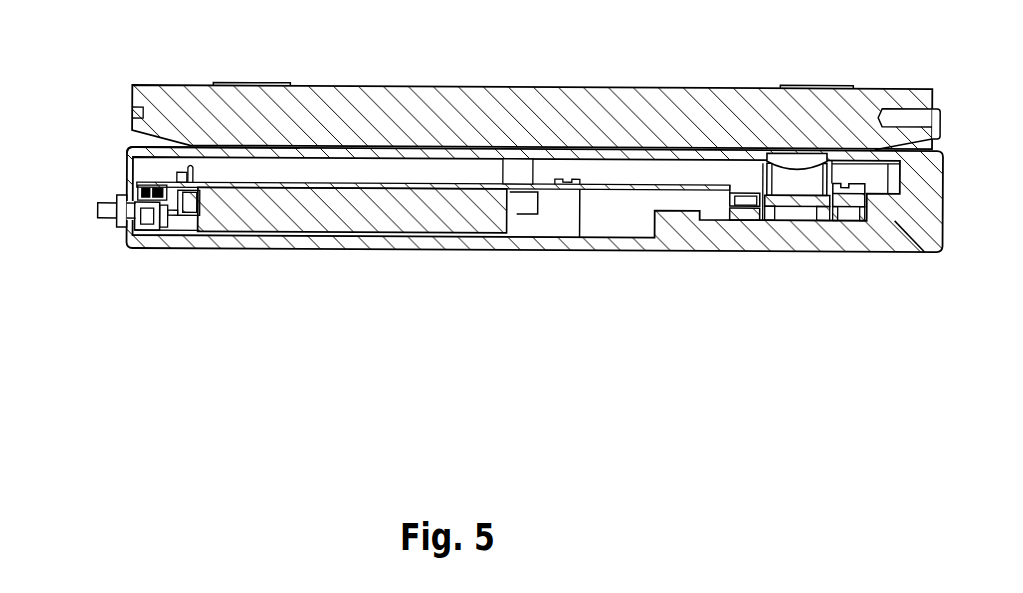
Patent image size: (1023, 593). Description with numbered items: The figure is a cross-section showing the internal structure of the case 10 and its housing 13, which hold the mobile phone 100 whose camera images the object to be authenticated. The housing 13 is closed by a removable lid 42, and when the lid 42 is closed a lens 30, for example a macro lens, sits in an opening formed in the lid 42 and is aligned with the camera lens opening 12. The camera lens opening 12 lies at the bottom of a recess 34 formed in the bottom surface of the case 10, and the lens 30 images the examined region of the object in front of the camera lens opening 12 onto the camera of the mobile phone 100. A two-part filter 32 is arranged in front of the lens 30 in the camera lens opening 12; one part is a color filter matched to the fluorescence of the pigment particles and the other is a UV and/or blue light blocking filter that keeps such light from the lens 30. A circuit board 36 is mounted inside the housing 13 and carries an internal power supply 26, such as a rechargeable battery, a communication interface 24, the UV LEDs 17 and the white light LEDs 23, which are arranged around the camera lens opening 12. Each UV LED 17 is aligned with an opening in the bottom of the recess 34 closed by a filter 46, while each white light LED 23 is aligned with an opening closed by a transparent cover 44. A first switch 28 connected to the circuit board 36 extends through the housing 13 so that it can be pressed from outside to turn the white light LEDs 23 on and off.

The mobile phone 100 is at (673, 102).
The case 10 is at (315, 248).
The housing 13 is at (930, 190).
The recess 34 is at (893, 242).
The removable lid 42 is at (133, 146).
The circuit board 36 is at (608, 188).
The internal power supply 26 is at (458, 222).
The first switch 28 is at (98, 212).
The communication interface 24 is at (148, 223).
The white light LEDs 23 is at (747, 195).
The transparent cover 44 is at (740, 212).
The camera lens opening 12 is at (788, 182).
The lens 30 is at (787, 158).
The two-part filter 32 is at (808, 207).
The filter 46 is at (855, 212).
The UV LEDs 17 is at (857, 193).